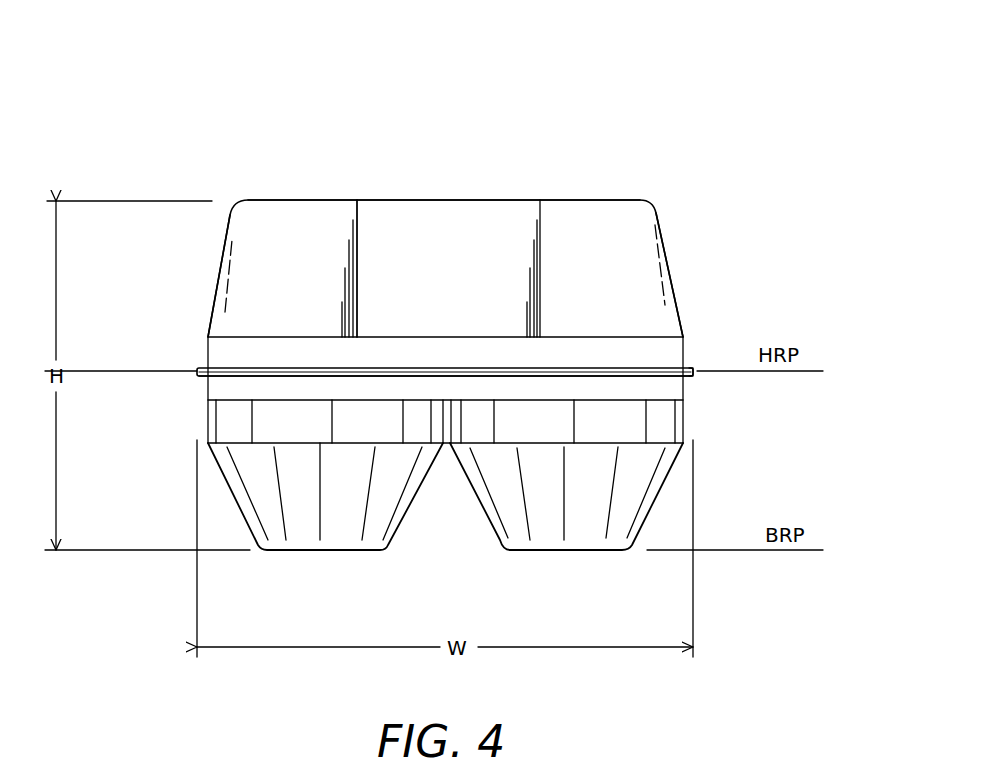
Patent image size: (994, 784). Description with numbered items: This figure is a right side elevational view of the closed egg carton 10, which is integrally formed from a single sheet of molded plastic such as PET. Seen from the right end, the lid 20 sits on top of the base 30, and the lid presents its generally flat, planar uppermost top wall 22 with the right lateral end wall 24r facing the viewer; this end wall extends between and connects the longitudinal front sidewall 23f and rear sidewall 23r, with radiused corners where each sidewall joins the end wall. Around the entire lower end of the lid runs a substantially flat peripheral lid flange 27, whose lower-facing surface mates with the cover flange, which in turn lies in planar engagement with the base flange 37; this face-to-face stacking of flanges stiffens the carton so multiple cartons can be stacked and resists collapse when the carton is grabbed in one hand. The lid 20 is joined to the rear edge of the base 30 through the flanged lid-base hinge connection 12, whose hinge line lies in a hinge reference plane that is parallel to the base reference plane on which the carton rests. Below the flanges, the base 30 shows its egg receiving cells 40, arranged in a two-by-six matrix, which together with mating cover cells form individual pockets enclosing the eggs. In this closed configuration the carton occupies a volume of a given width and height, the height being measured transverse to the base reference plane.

The carton 10 is at (554, 102).
The flanged lid-base hinge connection 12 is at (692, 370).
The lid 20 is at (652, 197).
The top wall 22 is at (480, 200).
The front sidewall 23f is at (215, 280).
The rear sidewall 23r is at (668, 255).
The right lateral end wall 24r is at (332, 222).
The lid flange 27 is at (198, 369).
The base 30 is at (684, 425).
The base flange 37 is at (198, 376).
The egg receiving cells 40 is at (287, 550).